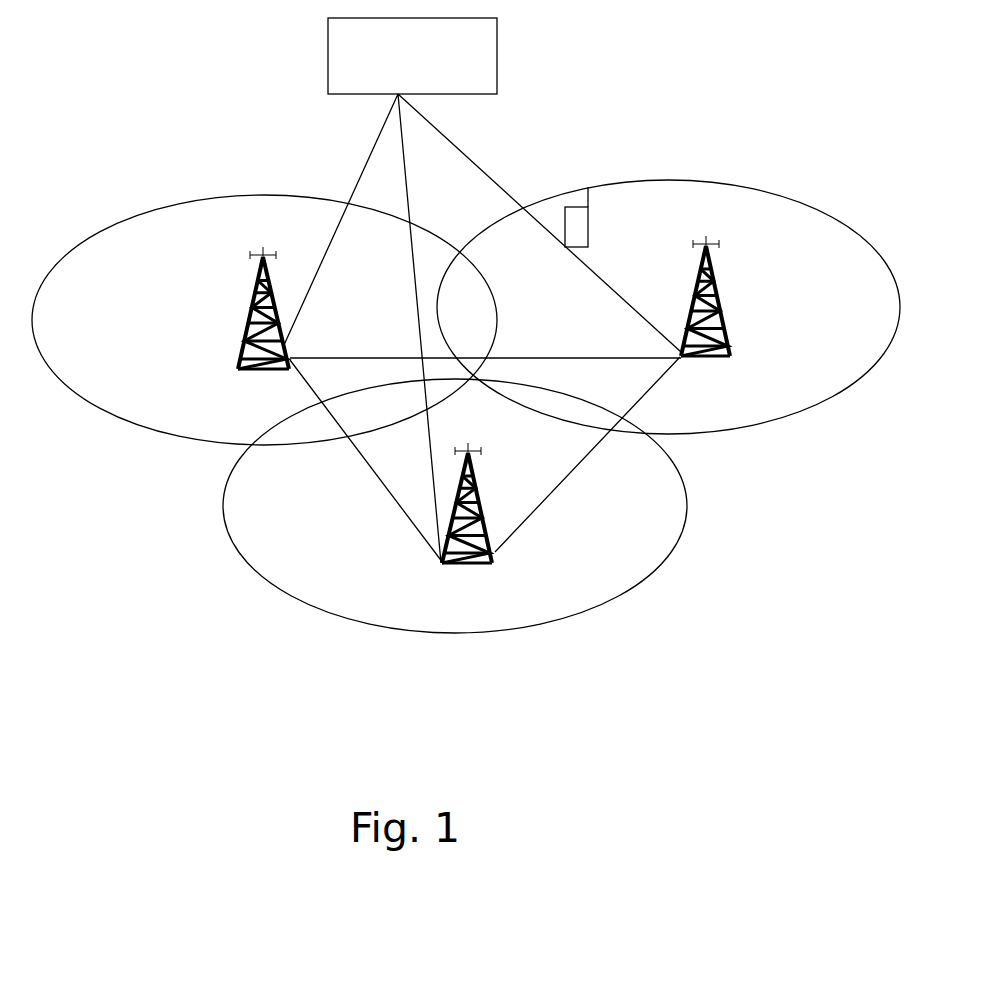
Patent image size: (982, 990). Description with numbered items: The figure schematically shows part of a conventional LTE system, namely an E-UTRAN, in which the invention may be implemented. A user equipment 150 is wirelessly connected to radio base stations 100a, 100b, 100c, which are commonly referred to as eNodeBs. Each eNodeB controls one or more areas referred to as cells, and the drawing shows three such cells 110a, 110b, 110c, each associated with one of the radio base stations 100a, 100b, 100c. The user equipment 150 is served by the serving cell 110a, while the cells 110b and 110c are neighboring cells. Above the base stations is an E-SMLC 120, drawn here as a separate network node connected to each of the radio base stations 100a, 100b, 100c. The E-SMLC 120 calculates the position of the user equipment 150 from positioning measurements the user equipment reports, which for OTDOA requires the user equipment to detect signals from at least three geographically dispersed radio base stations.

The E-SMLC 120 is at (485, 40).
The serving cell 110a is at (890, 300).
The neighboring cell 110b is at (352, 587).
The neighboring cell 110c is at (153, 273).
The radio base station 100a is at (722, 350).
The radio base station 100b is at (470, 550).
The radio base station 100c is at (238, 369).
The user equipment 150 is at (573, 207).